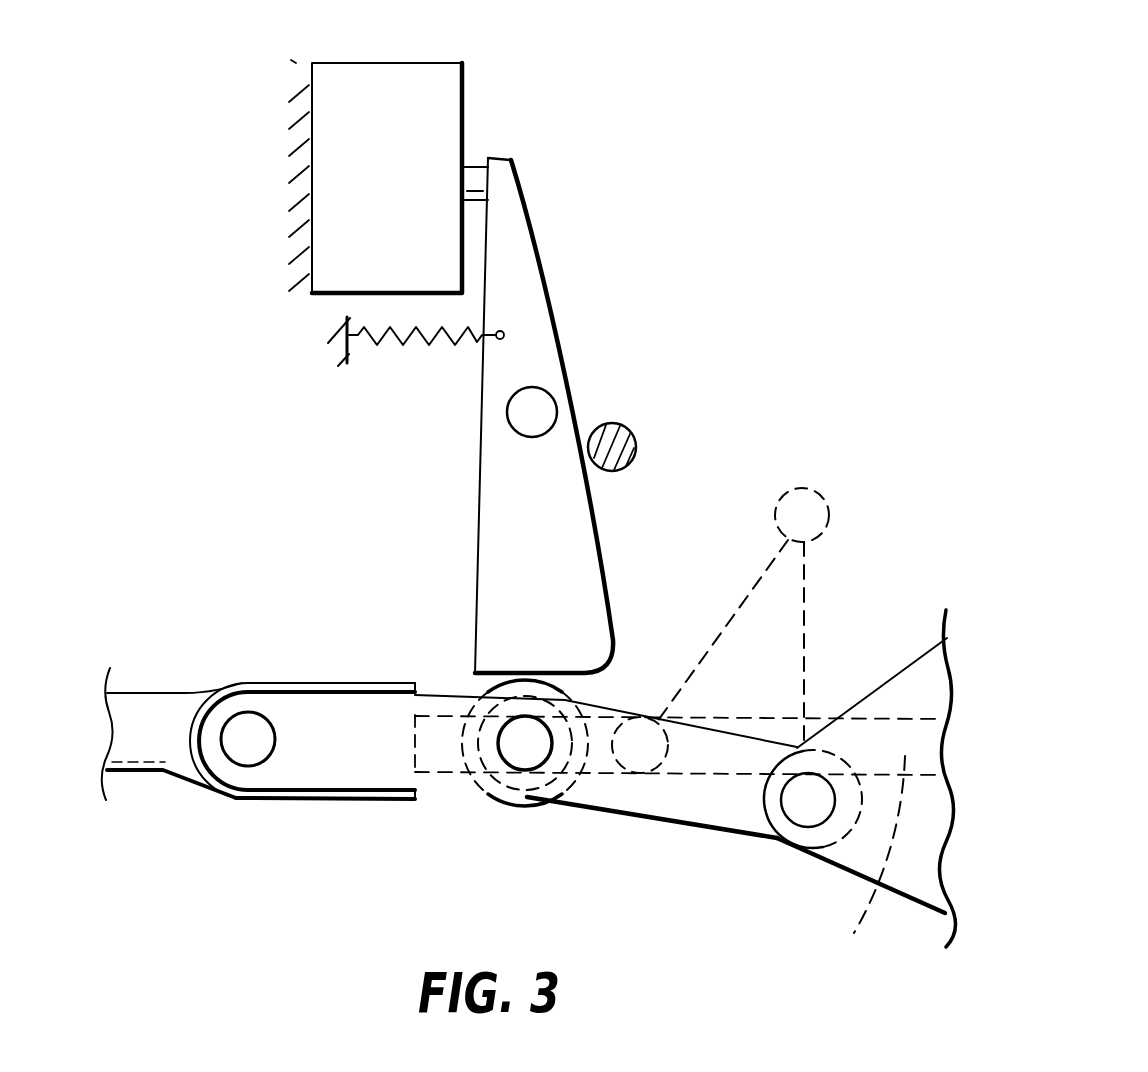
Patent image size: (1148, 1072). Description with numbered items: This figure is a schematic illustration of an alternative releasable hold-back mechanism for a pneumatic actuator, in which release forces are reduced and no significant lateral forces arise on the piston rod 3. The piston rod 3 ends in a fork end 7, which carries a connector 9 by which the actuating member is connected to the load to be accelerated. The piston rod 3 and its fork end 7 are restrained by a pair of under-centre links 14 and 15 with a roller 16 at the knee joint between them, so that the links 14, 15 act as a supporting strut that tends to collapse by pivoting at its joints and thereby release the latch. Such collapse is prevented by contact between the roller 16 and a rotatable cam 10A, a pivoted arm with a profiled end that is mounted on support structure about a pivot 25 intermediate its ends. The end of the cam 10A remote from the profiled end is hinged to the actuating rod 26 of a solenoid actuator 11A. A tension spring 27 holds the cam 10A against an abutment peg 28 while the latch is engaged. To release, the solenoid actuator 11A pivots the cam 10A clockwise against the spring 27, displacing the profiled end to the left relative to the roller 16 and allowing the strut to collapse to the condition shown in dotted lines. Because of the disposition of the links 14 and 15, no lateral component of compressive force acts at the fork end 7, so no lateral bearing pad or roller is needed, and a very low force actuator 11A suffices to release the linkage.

The piston rod 3 is at (806, 736).
The fork end 7 is at (350, 687).
The connector 9 is at (133, 717).
The rotatable cam 10A is at (553, 533).
The solenoid actuator 11A is at (388, 113).
The under-centre link 14 is at (450, 703).
The under-centre link 15 is at (653, 803).
The roller 16 is at (520, 800).
The pivot 25 is at (533, 412).
The actuating rod 26 is at (475, 175).
The tension spring 27 is at (440, 347).
The abutment peg 28 is at (640, 451).